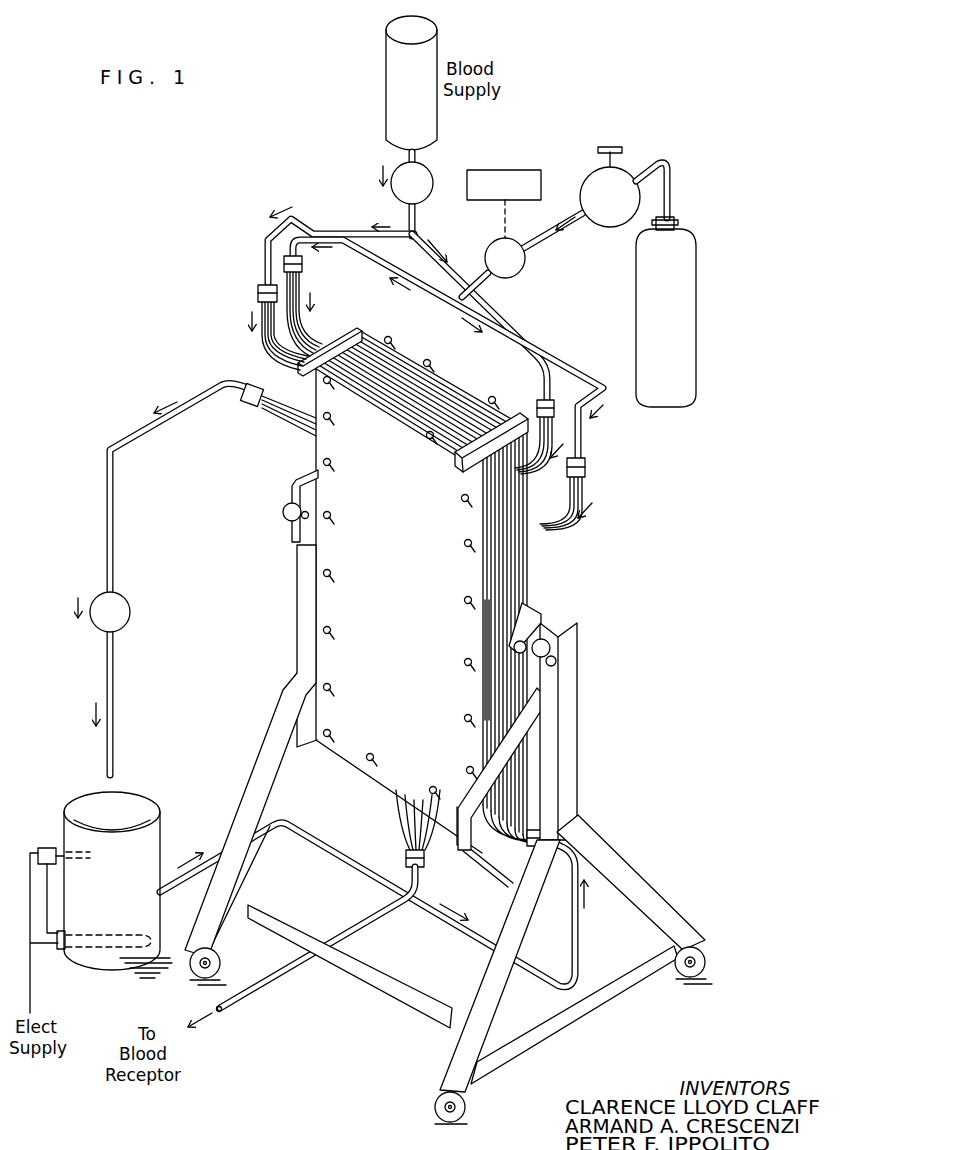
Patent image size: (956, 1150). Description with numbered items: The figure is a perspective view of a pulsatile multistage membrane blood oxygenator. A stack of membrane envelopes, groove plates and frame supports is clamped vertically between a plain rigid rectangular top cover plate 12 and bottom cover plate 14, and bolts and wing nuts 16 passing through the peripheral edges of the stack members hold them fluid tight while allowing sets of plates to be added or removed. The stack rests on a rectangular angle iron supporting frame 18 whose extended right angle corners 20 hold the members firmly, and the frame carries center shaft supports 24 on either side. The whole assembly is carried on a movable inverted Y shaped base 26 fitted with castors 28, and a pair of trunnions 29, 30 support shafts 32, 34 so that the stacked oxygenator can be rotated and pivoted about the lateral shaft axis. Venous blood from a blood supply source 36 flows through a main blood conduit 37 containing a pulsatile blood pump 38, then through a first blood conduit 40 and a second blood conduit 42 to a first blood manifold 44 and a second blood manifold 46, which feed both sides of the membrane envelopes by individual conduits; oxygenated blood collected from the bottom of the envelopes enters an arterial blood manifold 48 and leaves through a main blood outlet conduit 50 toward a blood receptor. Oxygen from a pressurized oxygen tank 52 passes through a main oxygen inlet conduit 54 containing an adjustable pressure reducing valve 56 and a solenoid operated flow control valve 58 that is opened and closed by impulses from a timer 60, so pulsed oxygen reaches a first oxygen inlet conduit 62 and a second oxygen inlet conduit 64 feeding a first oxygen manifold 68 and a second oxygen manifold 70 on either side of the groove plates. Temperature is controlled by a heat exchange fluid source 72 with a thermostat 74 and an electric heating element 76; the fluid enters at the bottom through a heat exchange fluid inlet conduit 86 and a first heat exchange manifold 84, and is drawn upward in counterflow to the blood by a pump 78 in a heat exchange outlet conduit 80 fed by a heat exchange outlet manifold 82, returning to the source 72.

The top cover plate 12 is at (382, 658).
The bottom cover plate 14 is at (528, 548).
The bolts and wing nuts 16 is at (333, 628).
The supporting angle iron frame 18 is at (528, 588).
The right angle corners 20 is at (336, 377).
The center shaft supports 24 is at (543, 614).
The inverted Y shaped base 26 is at (622, 870).
The castors 28 is at (224, 965).
The trunnion 29 is at (551, 650).
The trunnion 30 is at (287, 505).
The shaft 32 is at (557, 665).
The shaft 34 is at (284, 522).
The blood supply source 36 is at (401, 119).
The main blood conduit 37 is at (417, 219).
The pulsatile blood pump 38 is at (431, 170).
The first blood conduit 40 is at (478, 292).
The second blood conduit 42 is at (350, 232).
The first blood manifold 44 is at (536, 408).
The second blood manifold 46 is at (303, 266).
The arterial blood manifold 48 is at (405, 860).
The main blood outlet conduit 50 is at (368, 922).
The pressurized oxygen tank 52 is at (655, 357).
The main oxygen inlet conduit 54 is at (540, 251).
The adjustable pressure reducing valve 56 is at (592, 172).
The solenoid operated flow control valve 58 is at (522, 272).
The timer 60 is at (521, 170).
The first oxygen inlet conduit 62 is at (551, 357).
The second oxygen inlet conduit 64 is at (372, 258).
The first oxygen manifold 68 is at (588, 468).
The second oxygen manifold 70 is at (257, 292).
The heat exchange fluid source 72 is at (163, 840).
The thermostat 74 is at (42, 846).
The electric heating element 76 is at (98, 952).
The pump 78 is at (131, 612).
The heat exchange outlet conduit 80 is at (142, 437).
The heat exchange outlet manifold 82 is at (251, 403).
The first heat exchange manifold 84 is at (526, 838).
The heat exchange fluid inlet conduit 86 is at (175, 890).